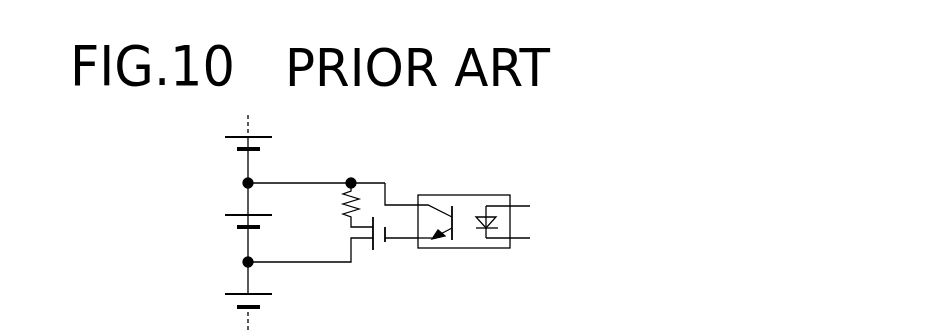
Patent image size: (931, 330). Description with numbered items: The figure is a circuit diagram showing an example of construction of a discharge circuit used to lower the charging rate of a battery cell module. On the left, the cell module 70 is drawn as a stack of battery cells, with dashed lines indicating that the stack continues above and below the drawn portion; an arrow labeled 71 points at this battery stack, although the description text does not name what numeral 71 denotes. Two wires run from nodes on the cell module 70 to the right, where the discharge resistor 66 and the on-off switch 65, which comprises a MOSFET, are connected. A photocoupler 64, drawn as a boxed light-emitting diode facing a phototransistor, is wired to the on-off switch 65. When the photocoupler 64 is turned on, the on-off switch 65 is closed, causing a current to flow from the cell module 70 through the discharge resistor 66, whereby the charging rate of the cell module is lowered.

The power supply (battery stack) 71 is at (156, 144).
The cell module 70 is at (233, 214).
The discharge resistor 66 is at (368, 195).
The on-off switch 65 is at (395, 220).
The photocoupler 64 is at (492, 194).